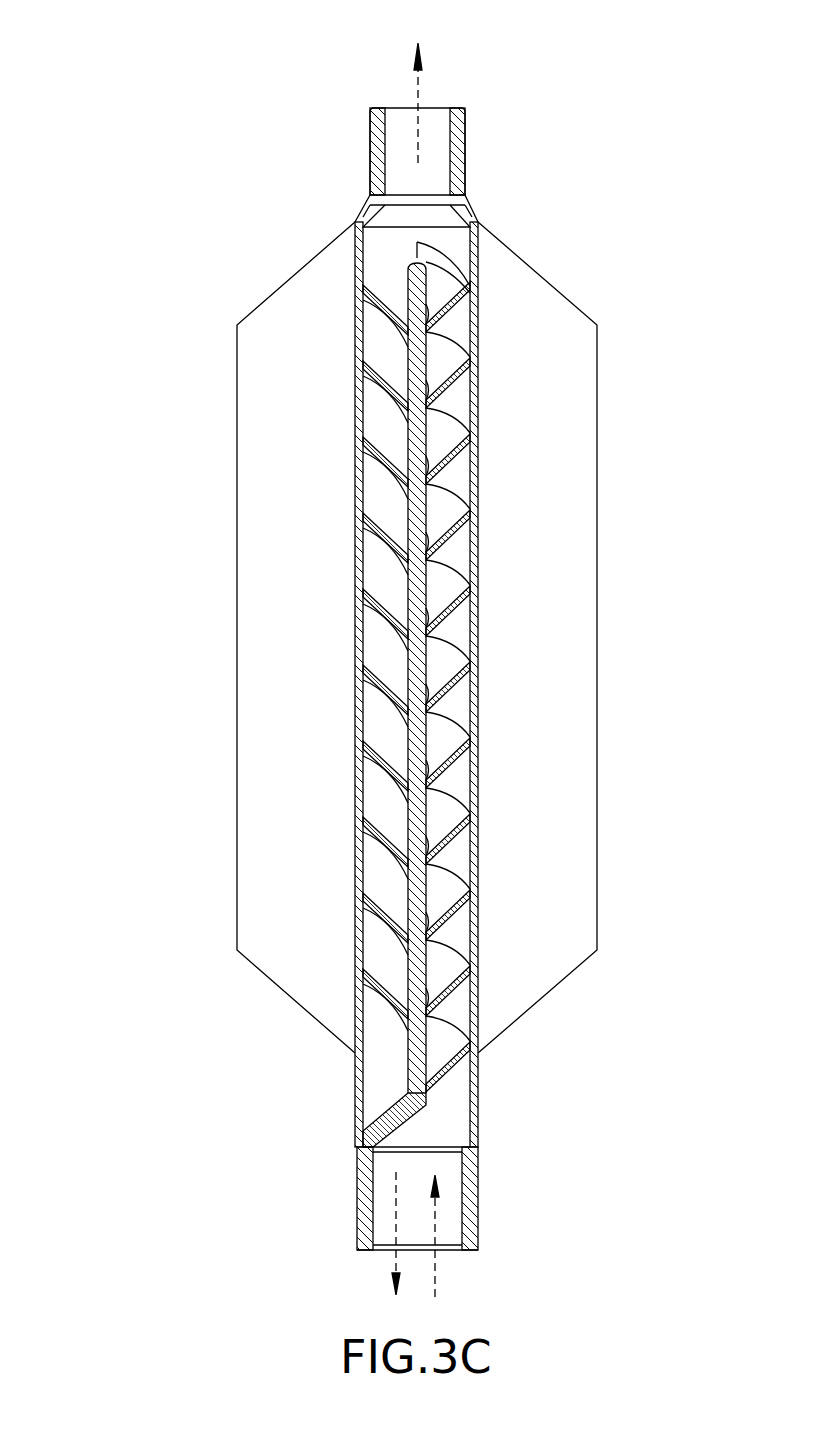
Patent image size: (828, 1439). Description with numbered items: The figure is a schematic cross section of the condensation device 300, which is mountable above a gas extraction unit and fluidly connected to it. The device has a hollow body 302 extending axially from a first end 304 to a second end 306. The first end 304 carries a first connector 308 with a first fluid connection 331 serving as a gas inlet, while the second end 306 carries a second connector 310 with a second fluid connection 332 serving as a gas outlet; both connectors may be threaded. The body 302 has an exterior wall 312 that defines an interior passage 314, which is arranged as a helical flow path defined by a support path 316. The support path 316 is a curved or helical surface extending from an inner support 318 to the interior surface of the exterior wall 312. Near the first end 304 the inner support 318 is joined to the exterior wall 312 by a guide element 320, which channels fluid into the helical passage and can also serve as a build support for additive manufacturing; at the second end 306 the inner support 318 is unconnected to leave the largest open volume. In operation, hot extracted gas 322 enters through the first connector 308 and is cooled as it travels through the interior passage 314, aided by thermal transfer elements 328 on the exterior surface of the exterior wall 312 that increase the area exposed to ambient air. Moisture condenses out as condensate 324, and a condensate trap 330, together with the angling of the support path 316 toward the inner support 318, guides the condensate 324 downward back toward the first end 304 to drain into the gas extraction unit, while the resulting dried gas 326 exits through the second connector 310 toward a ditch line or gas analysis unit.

The condensation device 300 is at (150, 295).
The body 302 is at (421, 684).
The first end 304 is at (446, 1198).
The second end 306 is at (447, 167).
The first connector 308 is at (365, 1190).
The second connector 310 is at (378, 162).
The exterior wall 312 is at (355, 720).
The interior passage 314 is at (368, 570).
The support path 316 is at (457, 757).
The inner support 318 is at (418, 740).
The guide element 320 is at (365, 1118).
The extracted gas 322 is at (435, 1213).
The condensate 324 is at (396, 1218).
The dried gas 326 is at (415, 128).
The thermal transfer elements 328 is at (290, 302).
The condensate trap 330 is at (421, 694).
The first fluid connection 331 is at (378, 1262).
The second fluid connection 332 is at (400, 93).